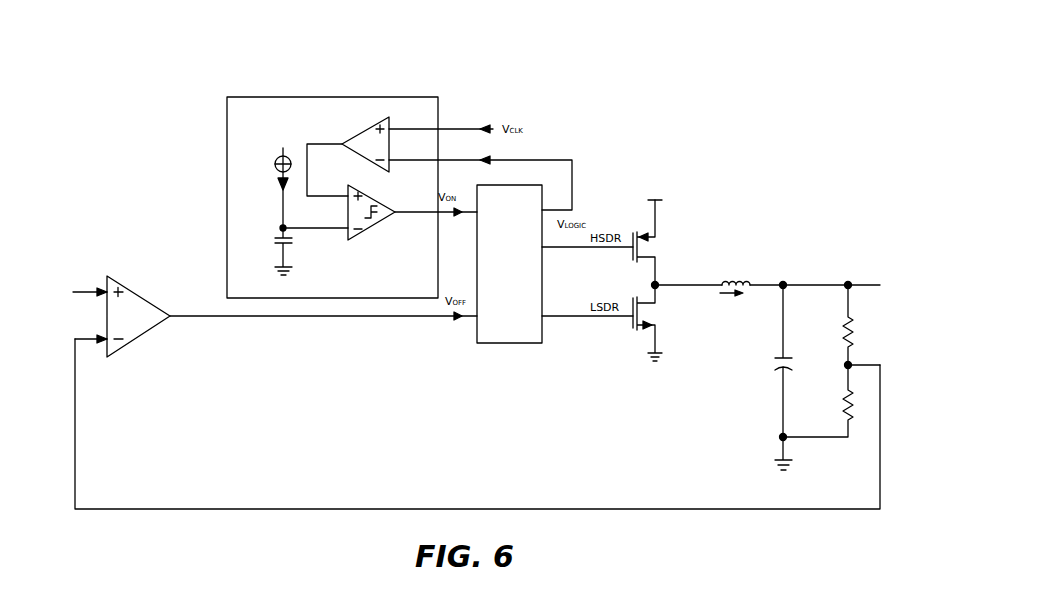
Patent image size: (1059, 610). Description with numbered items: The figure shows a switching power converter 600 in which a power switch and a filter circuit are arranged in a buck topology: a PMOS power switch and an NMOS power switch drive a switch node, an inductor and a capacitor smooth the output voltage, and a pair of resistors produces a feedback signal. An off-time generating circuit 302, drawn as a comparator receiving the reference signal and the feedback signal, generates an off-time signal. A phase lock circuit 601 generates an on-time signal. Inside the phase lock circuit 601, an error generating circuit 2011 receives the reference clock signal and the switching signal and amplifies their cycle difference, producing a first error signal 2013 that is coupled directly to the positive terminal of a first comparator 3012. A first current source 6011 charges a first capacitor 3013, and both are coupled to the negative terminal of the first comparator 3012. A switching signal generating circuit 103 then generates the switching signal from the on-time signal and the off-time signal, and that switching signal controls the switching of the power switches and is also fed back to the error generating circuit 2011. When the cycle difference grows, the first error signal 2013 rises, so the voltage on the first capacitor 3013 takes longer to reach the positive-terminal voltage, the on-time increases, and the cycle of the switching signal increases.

The switching power converter 600 is at (695, 213).
The phase lock circuit 601 is at (352, 176).
The error generating circuit 2011 is at (387, 165).
The first error signal 2013 is at (307, 144).
The first comparator 3012 is at (385, 217).
The first current source 6011 is at (276, 172).
The first capacitor 3013 is at (275, 243).
The switching signal generating circuit 103 is at (498, 327).
The off-time generating circuit 302 is at (127, 336).